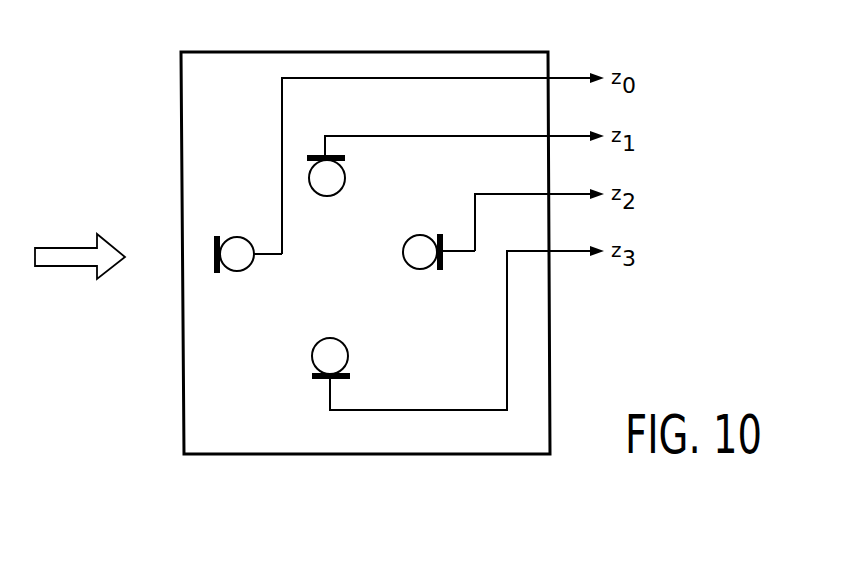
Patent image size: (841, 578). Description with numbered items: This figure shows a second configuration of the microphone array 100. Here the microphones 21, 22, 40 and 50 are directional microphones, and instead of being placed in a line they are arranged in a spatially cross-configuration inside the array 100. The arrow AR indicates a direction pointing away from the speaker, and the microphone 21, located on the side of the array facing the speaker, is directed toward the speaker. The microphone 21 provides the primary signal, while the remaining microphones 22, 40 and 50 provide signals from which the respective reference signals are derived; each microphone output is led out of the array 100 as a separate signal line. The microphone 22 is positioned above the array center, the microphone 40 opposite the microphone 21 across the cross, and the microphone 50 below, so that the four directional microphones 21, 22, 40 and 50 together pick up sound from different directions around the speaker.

The microphone array 100 is at (197, 422).
The microphone 21 is at (232, 238).
The microphone 22 is at (345, 176).
The microphone 40 is at (422, 270).
The microphone 50 is at (322, 352).
The arrow AR is at (67, 255).